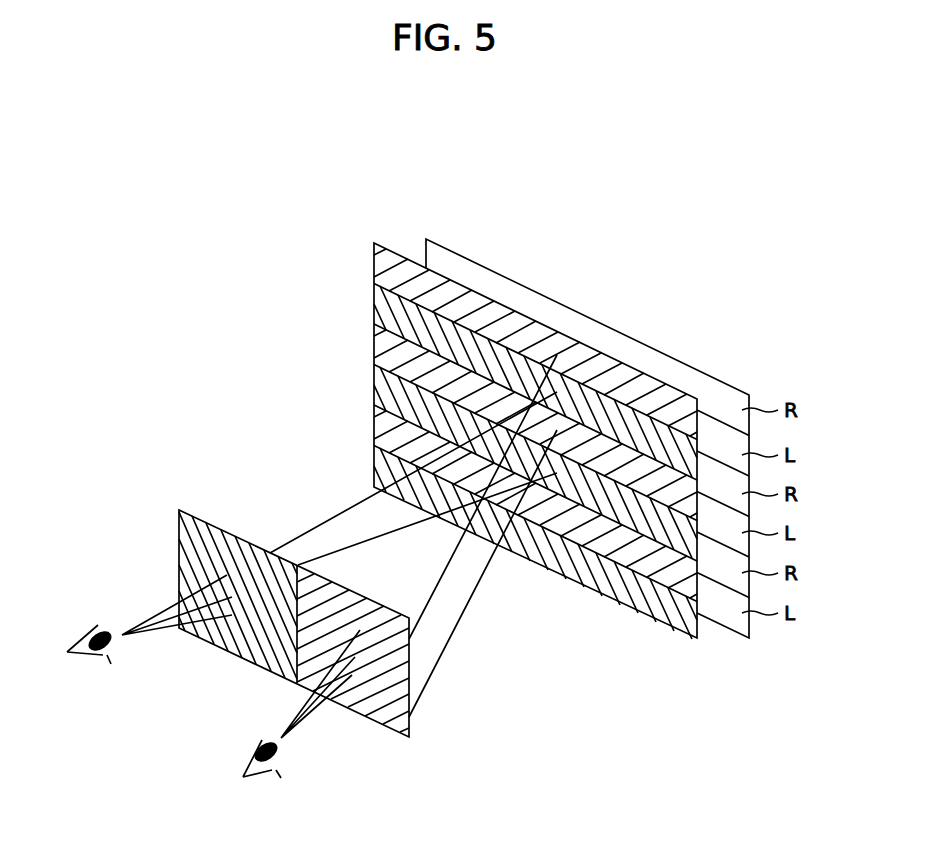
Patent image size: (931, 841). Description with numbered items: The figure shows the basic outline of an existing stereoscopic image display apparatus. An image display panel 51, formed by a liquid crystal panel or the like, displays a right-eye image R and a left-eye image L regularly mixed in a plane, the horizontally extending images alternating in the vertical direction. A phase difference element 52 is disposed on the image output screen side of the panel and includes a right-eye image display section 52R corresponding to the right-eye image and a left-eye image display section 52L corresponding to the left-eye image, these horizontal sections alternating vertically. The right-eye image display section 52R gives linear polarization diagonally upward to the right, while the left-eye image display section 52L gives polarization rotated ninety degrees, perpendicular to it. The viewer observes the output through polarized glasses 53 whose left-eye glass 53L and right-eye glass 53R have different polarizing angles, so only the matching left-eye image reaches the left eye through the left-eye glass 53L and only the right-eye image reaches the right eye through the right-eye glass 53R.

The image display panel 51 is at (583, 309).
The phase difference element 52 is at (400, 250).
The right-eye image display section 52R is at (368, 257).
The left-eye image display section 52L is at (385, 466).
The polarized glasses 53 is at (420, 663).
The left-eye glass 53L is at (242, 648).
The right-eye glass 53R is at (388, 718).